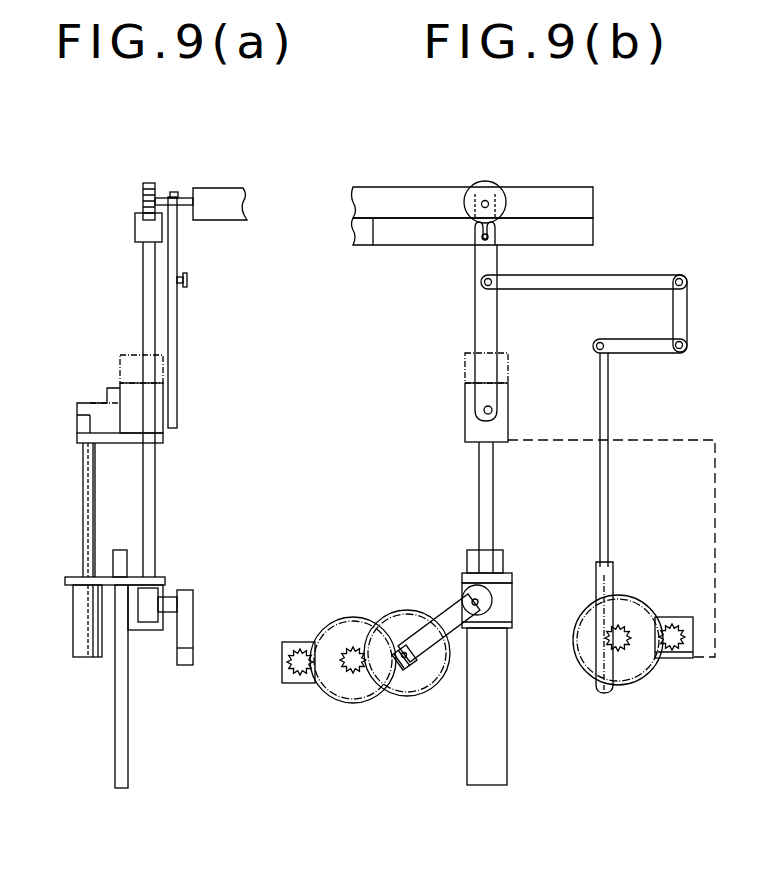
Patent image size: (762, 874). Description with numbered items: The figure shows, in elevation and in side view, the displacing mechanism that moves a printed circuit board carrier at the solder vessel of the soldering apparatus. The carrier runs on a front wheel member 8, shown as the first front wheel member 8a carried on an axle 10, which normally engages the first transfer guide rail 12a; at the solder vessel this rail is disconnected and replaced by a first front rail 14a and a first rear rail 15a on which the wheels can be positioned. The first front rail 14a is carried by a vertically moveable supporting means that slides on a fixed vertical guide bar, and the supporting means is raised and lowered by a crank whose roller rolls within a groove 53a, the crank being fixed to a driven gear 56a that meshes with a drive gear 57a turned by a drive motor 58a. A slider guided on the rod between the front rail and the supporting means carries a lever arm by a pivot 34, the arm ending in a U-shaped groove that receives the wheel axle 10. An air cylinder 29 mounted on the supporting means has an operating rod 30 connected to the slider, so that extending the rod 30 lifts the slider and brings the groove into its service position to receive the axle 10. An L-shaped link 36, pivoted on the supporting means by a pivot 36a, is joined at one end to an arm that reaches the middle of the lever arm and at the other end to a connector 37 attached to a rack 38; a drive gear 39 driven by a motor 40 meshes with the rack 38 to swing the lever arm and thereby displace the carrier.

The gear 8 is at (143, 191).
The first front wheel member 8a is at (478, 190).
The axle 10 is at (185, 198).
The first transfer guide rail 12a is at (365, 236).
The first front rail 14a is at (140, 232).
The first rear rail 15a is at (595, 232).
The air cylinder 29 is at (80, 632).
The operating rod 30 is at (85, 506).
The pivot 34 is at (492, 410).
The L-shaped link 36 is at (687, 312).
The pivot 36a is at (687, 352).
The connector 37 is at (606, 389).
The rack 38 is at (613, 572).
The drive gear 39 is at (635, 665).
The motor 40 is at (688, 658).
The groove 53a is at (512, 618).
The driven gear 56a is at (395, 682).
The drive gear 57a is at (345, 690).
The drive motor 58a is at (297, 680).